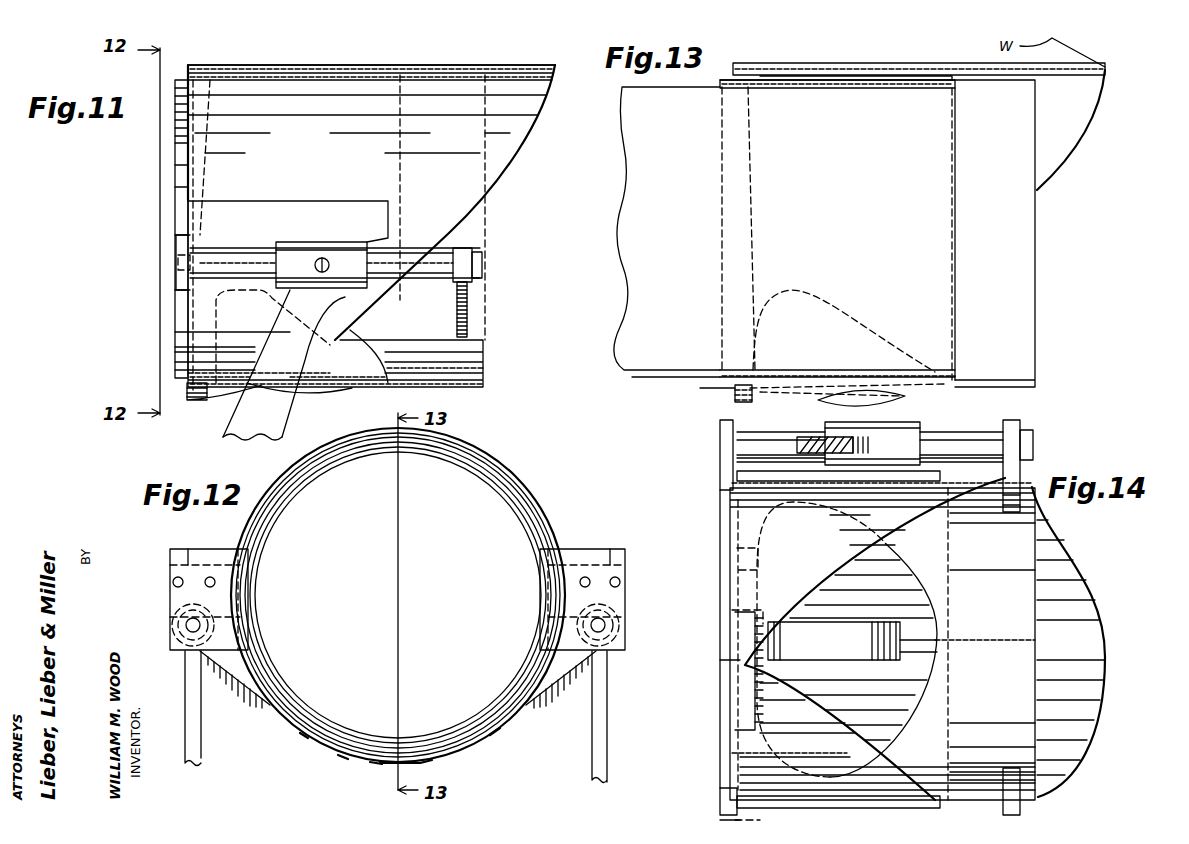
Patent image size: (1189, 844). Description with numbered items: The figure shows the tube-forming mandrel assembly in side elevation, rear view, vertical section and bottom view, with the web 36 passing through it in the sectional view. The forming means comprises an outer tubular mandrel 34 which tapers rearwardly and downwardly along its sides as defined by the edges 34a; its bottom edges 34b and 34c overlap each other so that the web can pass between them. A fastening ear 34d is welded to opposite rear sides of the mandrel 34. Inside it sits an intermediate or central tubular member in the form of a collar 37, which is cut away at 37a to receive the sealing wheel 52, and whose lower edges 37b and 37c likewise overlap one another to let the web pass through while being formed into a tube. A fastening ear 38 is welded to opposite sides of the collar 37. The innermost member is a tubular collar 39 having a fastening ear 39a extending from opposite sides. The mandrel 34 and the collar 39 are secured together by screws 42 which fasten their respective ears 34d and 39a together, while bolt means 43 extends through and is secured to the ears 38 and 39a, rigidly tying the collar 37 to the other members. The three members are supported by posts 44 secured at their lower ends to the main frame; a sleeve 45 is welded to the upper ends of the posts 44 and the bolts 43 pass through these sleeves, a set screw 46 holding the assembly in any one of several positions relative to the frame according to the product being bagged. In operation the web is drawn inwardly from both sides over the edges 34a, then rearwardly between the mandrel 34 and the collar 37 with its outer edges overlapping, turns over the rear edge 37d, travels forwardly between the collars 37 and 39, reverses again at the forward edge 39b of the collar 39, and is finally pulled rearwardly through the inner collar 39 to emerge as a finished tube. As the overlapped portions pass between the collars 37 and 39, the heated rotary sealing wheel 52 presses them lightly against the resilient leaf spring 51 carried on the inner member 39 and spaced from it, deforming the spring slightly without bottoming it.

In FIG. 11, the outer tubular mandrel 34 is at (526, 70).
In FIG. 13, the outer tubular mandrel 34 is at (1104, 64).
In FIG. 12, the outer tubular mandrel 34 is at (507, 470).
In FIG. 14, the outer tubular mandrel 34 is at (1085, 605).
In FIG. 11, the edges of outer mandrel 34a is at (495, 180).
In FIG. 13, the edges of outer mandrel 34a is at (1048, 170).
In FIG. 14, the edges of outer mandrel 34a is at (905, 510).
In FIG. 11, the bottom edge of outer mandrel 34b is at (192, 402).
In FIG. 13, the bottom edge of outer mandrel 34b is at (735, 402).
In FIG. 12, the bottom edge of outer mandrel 34b is at (405, 766).
In FIG. 14, the bottom edge of outer mandrel 34b is at (740, 641).
In FIG. 13, the bottom edge of outer mandrel 34c is at (733, 393).
In FIG. 12, the bottom edge of outer mandrel 34c is at (386, 745).
In FIG. 14, the bottom edge of outer mandrel 34c is at (740, 626).
In FIG. 11, the fastening ear 34d is at (192, 233).
In FIG. 12, the fastening ear 34d is at (190, 562).
In FIG. 14, the fastening ear 34d is at (735, 460).
In FIG. 13, the duct 36 is at (640, 150).
In FIG. 11, the collar 37 is at (470, 366).
In FIG. 13, the collar 37 is at (1027, 300).
In FIG. 12, the collar 37 is at (522, 495).
In FIG. 14, the collar 37 is at (1025, 686).
In FIG. 11, the cut-away of collar 37a is at (340, 340).
In FIG. 13, the cut-away of collar 37a is at (866, 330).
In FIG. 14, the cut-away of collar 37a is at (896, 572).
In FIG. 13, the lower edge of collar 37b is at (735, 390).
In FIG. 12, the lower edge of collar 37b is at (480, 730).
In FIG. 14, the lower edge of collar 37b is at (745, 574).
In FIG. 13, the lower edge of collar 37c is at (735, 397).
In FIG. 12, the lower edge of collar 37c is at (330, 752).
In FIG. 14, the lower edge of collar 37c is at (742, 712).
In FIG. 11, the rear edge of collar 37d is at (210, 100).
In FIG. 13, the rear edge of collar 37d is at (758, 80).
In FIG. 12, the rear edge of collar 37d is at (334, 452).
In FIG. 11, the fastening ear 38 is at (459, 310).
In FIG. 12, the fastening ear 38 is at (246, 682).
In FIG. 14, the fastening ear 38 is at (1012, 432).
In FIG. 11, the tubular collar 39 is at (354, 353).
In FIG. 13, the tubular collar 39 is at (918, 90).
In FIG. 14, the tubular collar 39 is at (905, 686).
In FIG. 11, the fastening ear 39a is at (180, 275).
In FIG. 12, the fastening ear 39a is at (172, 560).
In FIG. 14, the fastening ear 39a is at (737, 433).
In FIG. 11, the forward edge of collar 39b is at (400, 160).
In FIG. 13, the forward edge of collar 39b is at (956, 249).
In FIG. 14, the forward edge of collar 39b is at (956, 655).
In FIG. 11, the screws 42 is at (186, 221).
In FIG. 12, the screws 42 is at (396, 590).
In FIG. 11, the bolt means 43 is at (235, 262).
In FIG. 12, the bolt means 43 is at (188, 626).
In FIG. 14, the bolt means 43 is at (1036, 443).
In FIG. 11, the posts 44 is at (280, 425).
In FIG. 12, the posts 44 is at (198, 758).
In FIG. 14, the posts 44 is at (803, 437).
In FIG. 11, the sleeve 45 is at (347, 245).
In FIG. 14, the sleeve 45 is at (910, 430).
In FIG. 11, the set screw 46 is at (315, 266).
In FIG. 11, the leaf spring 51 is at (328, 388).
In FIG. 13, the leaf spring 51 is at (865, 392).
In FIG. 14, the leaf spring 51 is at (835, 630).
In FIG. 13, the sealing wheel 52 is at (905, 404).